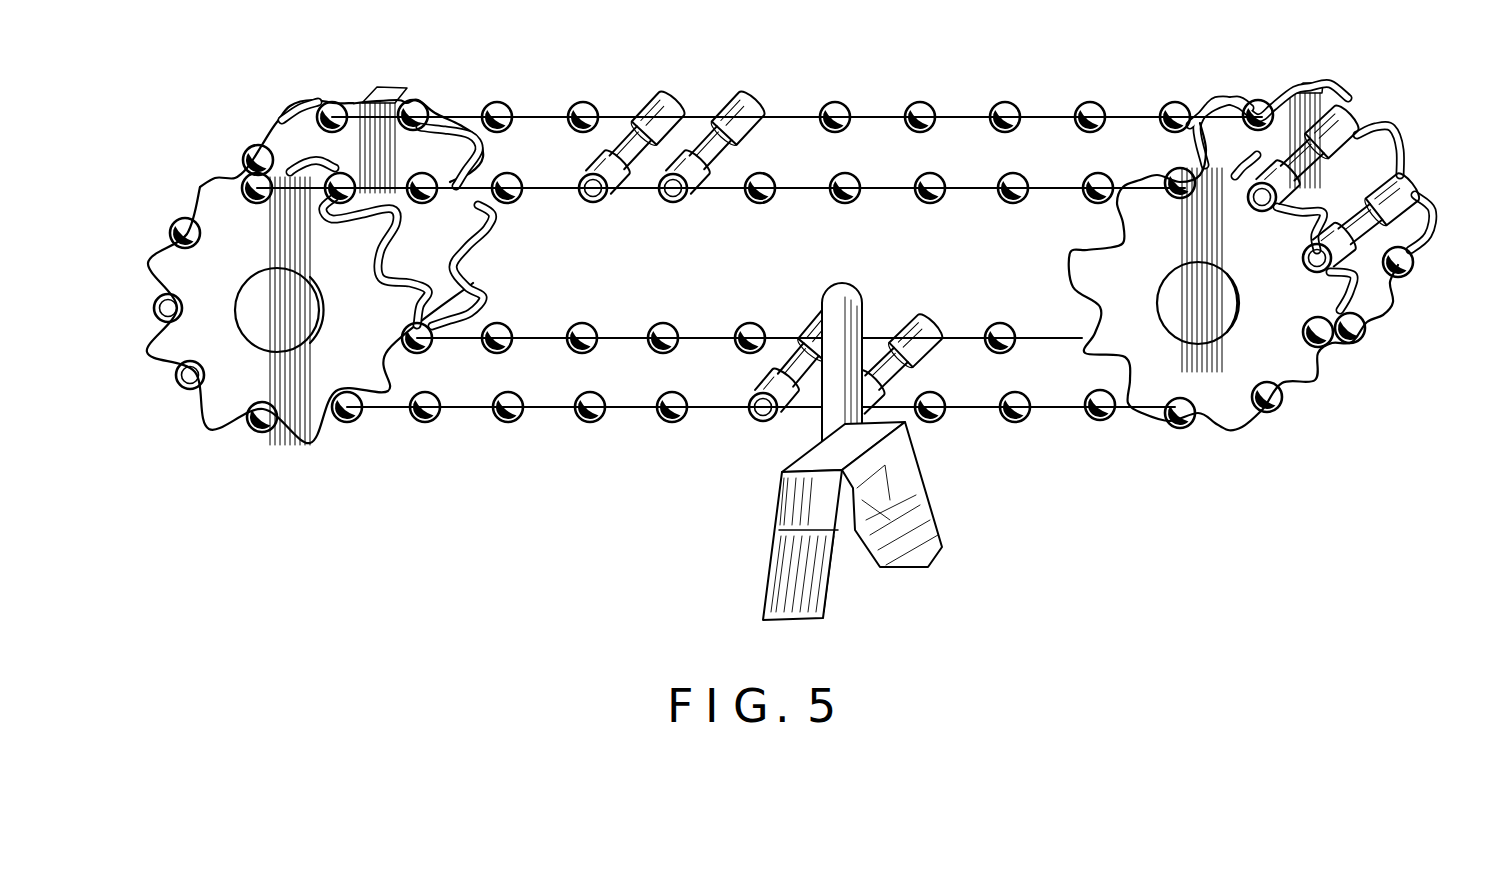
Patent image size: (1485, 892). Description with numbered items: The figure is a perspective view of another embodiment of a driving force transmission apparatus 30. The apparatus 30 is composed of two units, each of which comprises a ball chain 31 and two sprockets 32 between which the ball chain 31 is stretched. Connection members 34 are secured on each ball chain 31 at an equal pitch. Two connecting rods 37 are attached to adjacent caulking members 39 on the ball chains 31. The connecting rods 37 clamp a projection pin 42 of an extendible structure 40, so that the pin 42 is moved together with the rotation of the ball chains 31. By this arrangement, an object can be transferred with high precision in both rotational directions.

The driving force transmission apparatus 30 is at (630, 100).
The ball chain 31 is at (967, 100).
The sprocket 32 is at (277, 120).
The connection member 34 is at (490, 105).
The connecting rod 37 is at (740, 108).
The caulking member 39 is at (673, 200).
The extendible structure 40 is at (938, 503).
The projection pin 42 is at (828, 300).